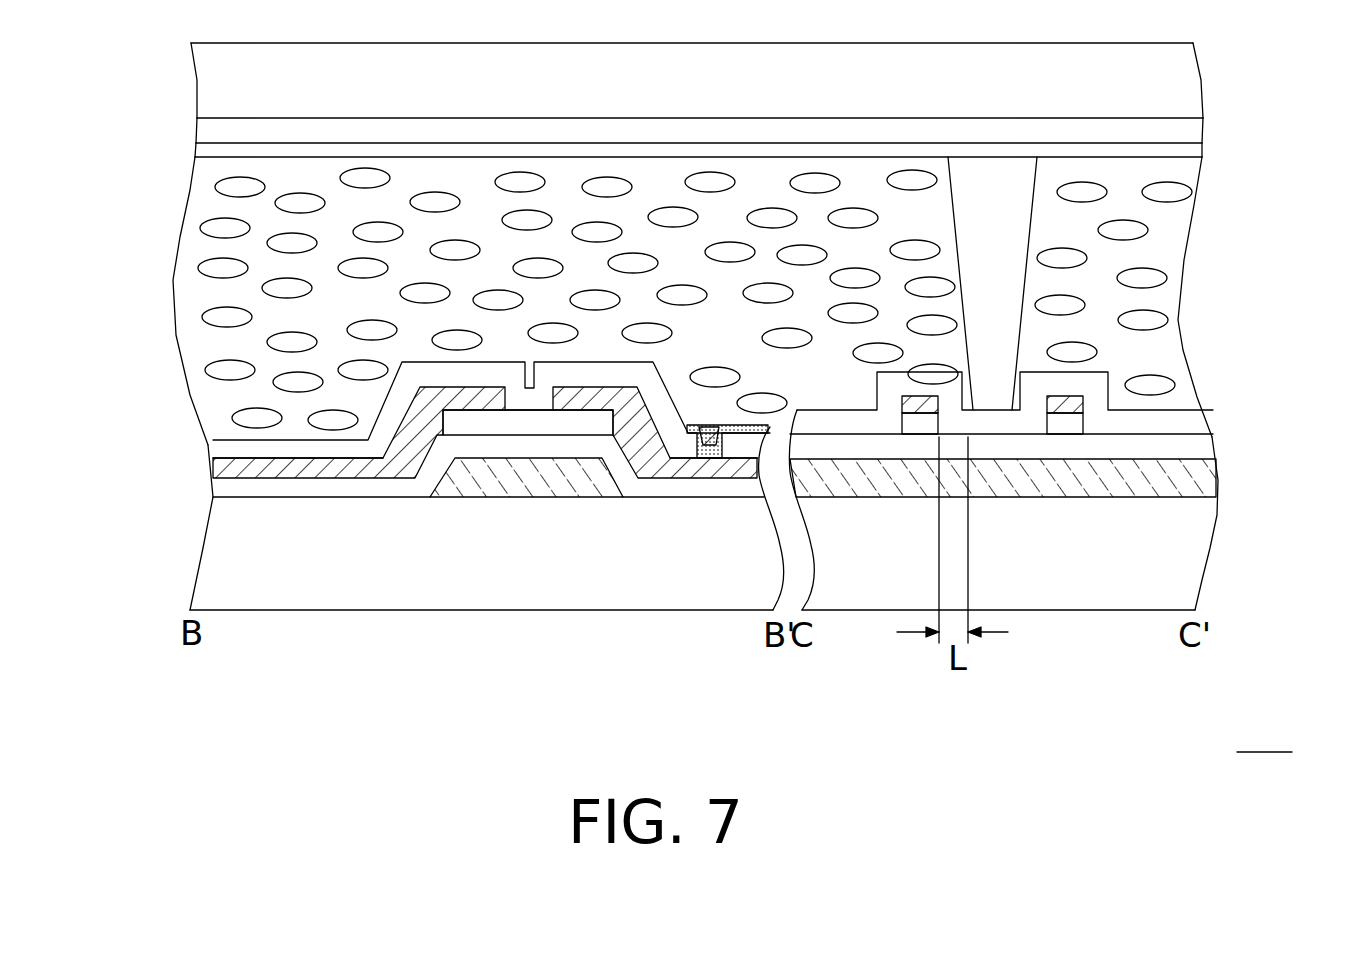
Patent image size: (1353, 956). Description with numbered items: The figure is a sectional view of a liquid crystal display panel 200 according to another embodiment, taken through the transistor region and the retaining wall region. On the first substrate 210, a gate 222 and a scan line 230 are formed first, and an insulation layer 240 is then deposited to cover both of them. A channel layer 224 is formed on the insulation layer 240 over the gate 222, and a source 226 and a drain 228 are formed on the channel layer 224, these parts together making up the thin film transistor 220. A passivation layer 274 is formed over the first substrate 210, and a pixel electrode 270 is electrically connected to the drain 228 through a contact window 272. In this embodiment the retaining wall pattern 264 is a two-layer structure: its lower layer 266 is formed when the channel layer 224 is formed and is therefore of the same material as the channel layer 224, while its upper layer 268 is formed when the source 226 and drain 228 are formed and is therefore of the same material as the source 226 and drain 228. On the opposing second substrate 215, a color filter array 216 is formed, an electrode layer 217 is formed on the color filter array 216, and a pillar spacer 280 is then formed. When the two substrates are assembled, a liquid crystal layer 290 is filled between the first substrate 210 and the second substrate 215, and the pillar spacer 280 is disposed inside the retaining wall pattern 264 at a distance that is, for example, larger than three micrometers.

The liquid crystal display panel 200 is at (1264, 733).
The first substrate 210 is at (222, 548).
The second substrate 215 is at (1177, 77).
The color filter array 216 is at (1183, 133).
The electrode layer 217 is at (1188, 152).
The thin film transistor 220 is at (485, 571).
The gate 222 is at (568, 483).
The channel layer 224 is at (528, 427).
The source 226 is at (482, 397).
The drain 228 is at (600, 400).
The scan line 230 is at (1203, 482).
The insulation layer 240 is at (213, 487).
The retaining wall pattern 264 is at (1126, 360).
The lower layer 266 is at (1073, 423).
The upper layer 268 is at (1065, 400).
The pixel electrode 270 is at (745, 432).
The contact window 272 is at (708, 440).
The passivation layer 274 is at (213, 452).
The pillar spacer 280 is at (997, 262).
The liquid crystal layer 290 is at (213, 288).